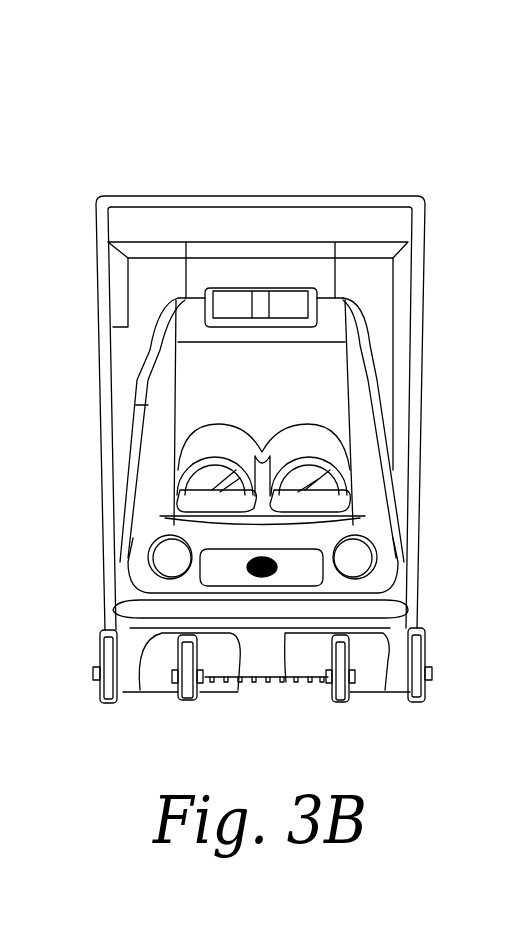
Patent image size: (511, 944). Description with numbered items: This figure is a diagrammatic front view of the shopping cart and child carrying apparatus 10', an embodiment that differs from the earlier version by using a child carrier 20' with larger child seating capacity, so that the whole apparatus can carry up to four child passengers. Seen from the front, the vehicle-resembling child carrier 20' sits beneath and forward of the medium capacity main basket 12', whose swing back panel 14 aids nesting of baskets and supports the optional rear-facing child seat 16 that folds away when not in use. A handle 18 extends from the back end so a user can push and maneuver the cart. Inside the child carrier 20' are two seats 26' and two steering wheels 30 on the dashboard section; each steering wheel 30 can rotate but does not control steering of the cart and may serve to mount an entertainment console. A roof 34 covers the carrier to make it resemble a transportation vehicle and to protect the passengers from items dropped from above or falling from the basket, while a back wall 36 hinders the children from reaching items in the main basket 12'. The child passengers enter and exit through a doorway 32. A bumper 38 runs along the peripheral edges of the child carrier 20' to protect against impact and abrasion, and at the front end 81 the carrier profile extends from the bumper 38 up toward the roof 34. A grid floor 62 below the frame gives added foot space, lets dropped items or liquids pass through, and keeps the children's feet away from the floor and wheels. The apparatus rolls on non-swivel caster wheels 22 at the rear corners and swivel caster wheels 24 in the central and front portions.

The shopping cart and child carrying apparatus 10' is at (235, 351).
The swing back panel 14 is at (167, 242).
The handle 18 is at (340, 196).
The main basket 12' is at (308, 357).
The rear-facing child seat 16 is at (140, 323).
The roof 34 is at (332, 322).
The back wall 36 is at (263, 412).
The doorway 32 is at (145, 377).
The child carrier 20' is at (421, 430).
The seat 26' is at (199, 449).
The steering wheel 30 is at (212, 473).
The front end 81 is at (510, 505).
The bumper 38 is at (290, 609).
The grid floor 62 is at (245, 682).
The non-swivel caster wheel 22 is at (100, 642).
The swivel caster wheel 24 is at (187, 696).